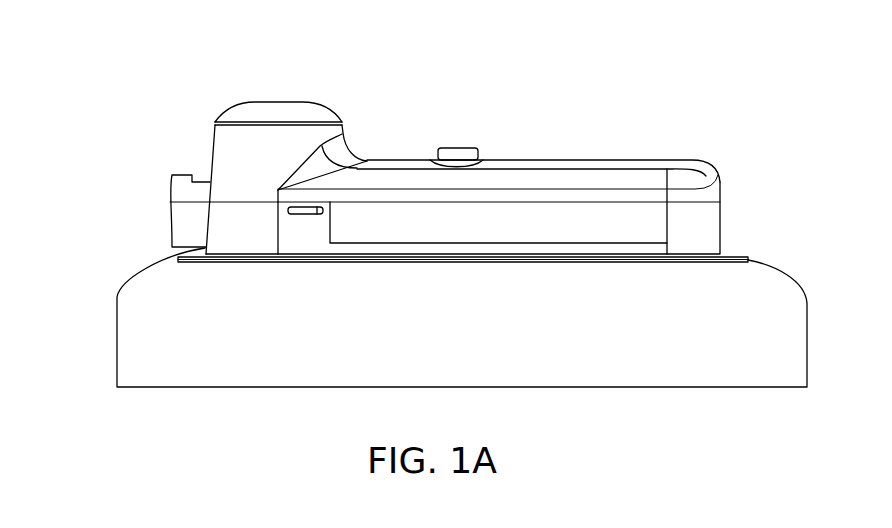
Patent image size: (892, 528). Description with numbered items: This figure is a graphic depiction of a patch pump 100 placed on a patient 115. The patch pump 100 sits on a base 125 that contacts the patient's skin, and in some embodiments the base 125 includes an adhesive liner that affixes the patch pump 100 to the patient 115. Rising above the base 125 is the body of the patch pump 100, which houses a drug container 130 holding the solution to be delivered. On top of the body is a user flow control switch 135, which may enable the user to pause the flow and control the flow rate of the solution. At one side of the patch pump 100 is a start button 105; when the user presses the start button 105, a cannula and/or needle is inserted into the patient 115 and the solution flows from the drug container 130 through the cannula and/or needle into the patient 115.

The patch pump 100 is at (528, 215).
The start button 105 is at (170, 220).
The patient 115 is at (602, 357).
The base 125 is at (733, 257).
The drug container 130 is at (595, 165).
The user flow control switch 135 is at (457, 148).